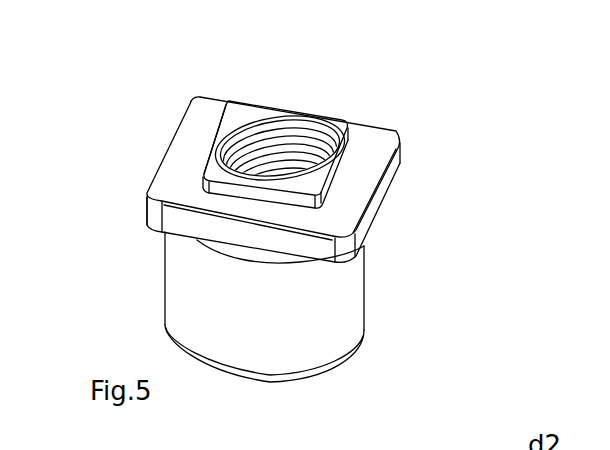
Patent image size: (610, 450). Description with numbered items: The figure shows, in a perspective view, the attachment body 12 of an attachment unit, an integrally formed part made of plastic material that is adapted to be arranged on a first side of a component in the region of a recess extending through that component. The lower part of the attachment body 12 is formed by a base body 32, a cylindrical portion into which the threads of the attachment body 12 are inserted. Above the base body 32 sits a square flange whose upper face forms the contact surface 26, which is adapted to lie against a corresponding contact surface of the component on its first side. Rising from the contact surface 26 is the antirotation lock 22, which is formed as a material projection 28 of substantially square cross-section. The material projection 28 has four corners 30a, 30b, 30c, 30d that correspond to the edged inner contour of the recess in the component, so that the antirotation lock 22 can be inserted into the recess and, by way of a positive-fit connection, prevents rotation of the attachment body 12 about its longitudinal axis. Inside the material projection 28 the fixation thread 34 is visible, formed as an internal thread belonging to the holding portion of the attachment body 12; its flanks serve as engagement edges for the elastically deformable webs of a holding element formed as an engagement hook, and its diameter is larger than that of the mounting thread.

The attachment body 12 is at (474, 80).
The antirotation lock 22 is at (341, 141).
The contact surface 26 is at (363, 189).
The material projection 28 is at (247, 123).
The corner 30a is at (149, 214).
The corner 30b is at (369, 224).
The corner 30c is at (346, 133).
The corner 30d is at (230, 114).
The base body 32 is at (253, 362).
The fixation thread 34 is at (240, 146).